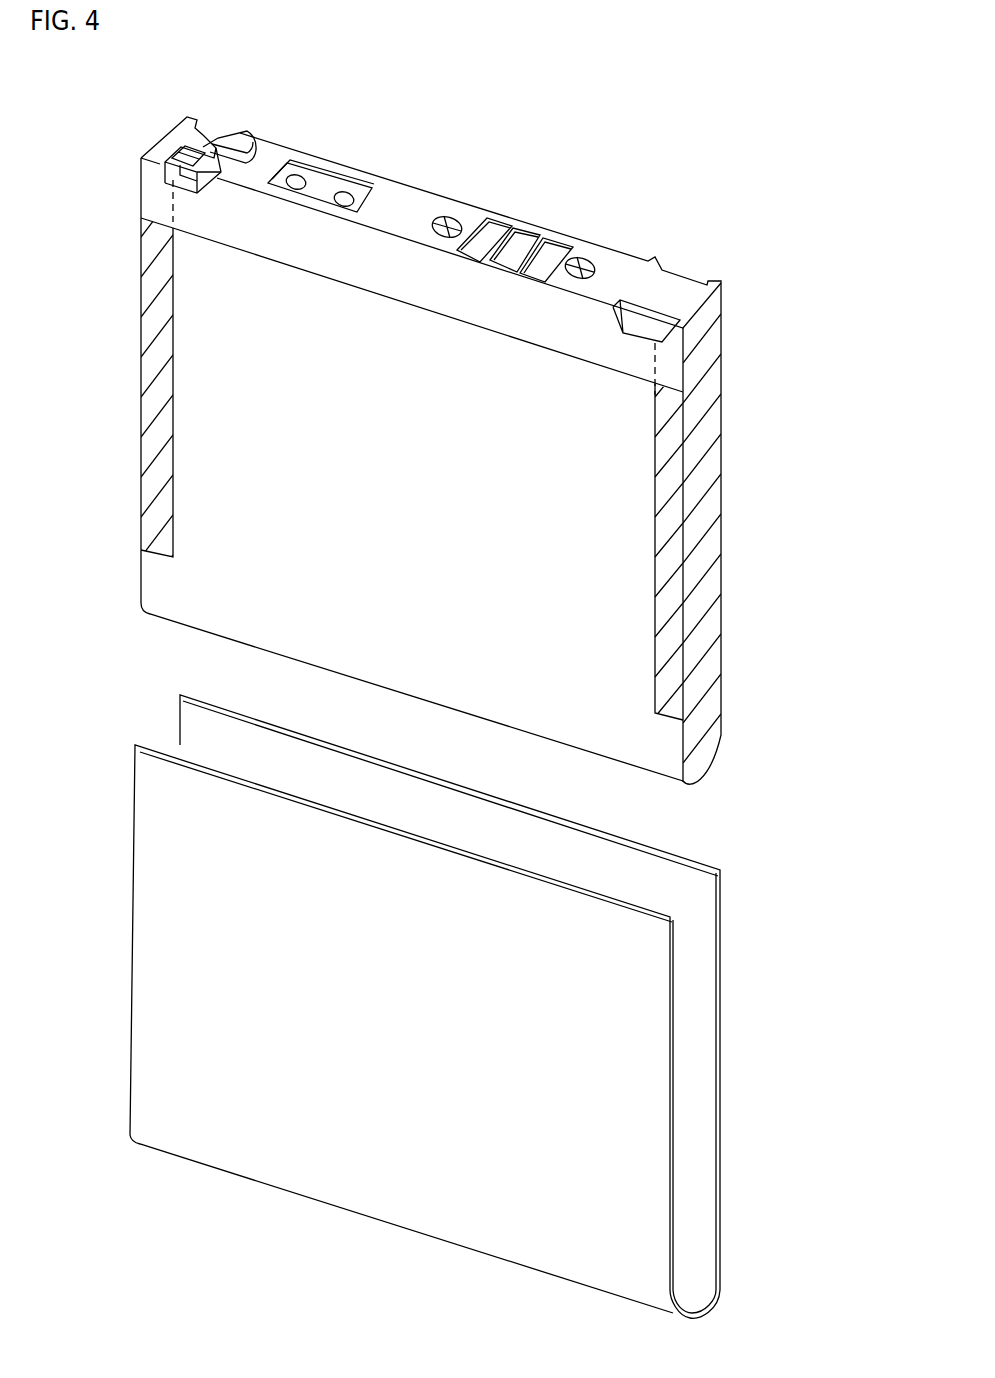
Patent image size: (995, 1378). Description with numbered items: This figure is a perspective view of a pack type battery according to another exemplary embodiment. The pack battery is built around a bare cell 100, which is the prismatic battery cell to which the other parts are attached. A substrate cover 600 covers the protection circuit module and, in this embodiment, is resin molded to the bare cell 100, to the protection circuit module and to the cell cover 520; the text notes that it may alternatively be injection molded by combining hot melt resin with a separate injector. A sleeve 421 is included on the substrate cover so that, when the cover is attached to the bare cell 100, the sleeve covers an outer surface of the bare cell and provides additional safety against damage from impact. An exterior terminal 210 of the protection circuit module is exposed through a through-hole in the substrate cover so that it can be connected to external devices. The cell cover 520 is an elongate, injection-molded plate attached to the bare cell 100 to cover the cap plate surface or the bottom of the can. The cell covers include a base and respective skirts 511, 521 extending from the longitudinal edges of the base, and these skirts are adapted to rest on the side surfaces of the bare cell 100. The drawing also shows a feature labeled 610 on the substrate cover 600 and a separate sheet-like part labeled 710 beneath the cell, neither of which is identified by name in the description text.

The bare cell 100 is at (222, 623).
The exterior terminal 210 is at (491, 232).
The sleeve 421 is at (195, 212).
The skirt 511 is at (157, 352).
The cell cover 520 is at (707, 560).
The skirt 521 is at (668, 437).
The substrate cover 600 is at (398, 196).
The connector terminals 610 is at (530, 228).
The heat dissipation sheet 710 is at (159, 936).